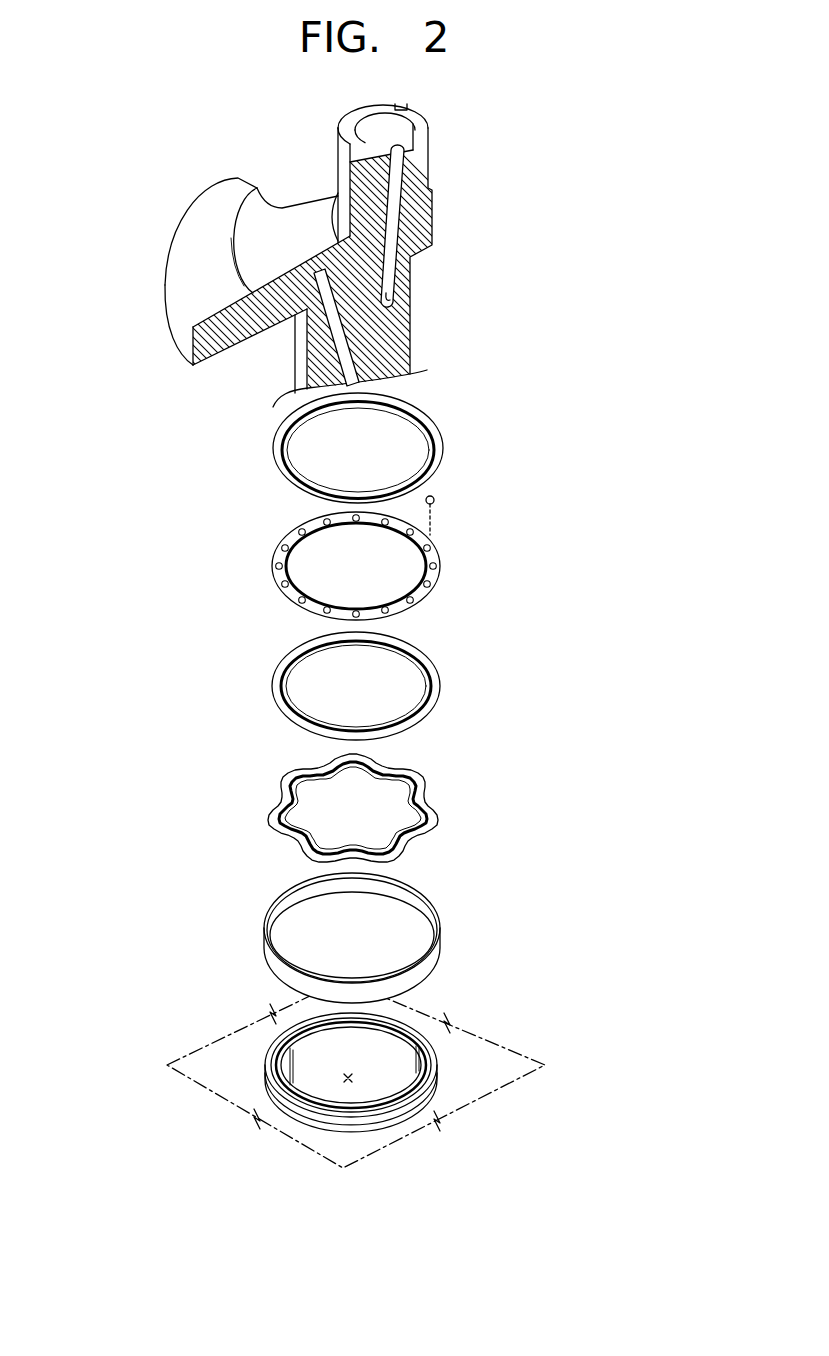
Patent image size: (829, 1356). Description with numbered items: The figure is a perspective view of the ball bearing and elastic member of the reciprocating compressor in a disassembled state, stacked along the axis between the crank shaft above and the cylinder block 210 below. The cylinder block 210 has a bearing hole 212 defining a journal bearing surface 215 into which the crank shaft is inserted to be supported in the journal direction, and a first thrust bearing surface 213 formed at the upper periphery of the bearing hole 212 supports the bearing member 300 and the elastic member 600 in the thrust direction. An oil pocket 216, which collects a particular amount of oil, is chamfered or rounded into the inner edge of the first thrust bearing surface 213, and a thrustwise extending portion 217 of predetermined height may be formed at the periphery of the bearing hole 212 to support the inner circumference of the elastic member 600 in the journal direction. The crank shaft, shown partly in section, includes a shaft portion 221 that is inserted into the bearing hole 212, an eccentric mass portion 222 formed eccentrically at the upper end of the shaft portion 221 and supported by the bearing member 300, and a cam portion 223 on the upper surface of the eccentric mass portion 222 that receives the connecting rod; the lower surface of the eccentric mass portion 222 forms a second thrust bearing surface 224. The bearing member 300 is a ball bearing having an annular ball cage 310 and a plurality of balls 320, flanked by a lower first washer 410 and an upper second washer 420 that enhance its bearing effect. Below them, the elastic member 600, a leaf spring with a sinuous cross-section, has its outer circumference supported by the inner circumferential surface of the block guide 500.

The cylinder block 210 is at (178, 1040).
The bearing hole 212 is at (355, 1078).
The first thrust bearing surface 213 is at (272, 1050).
The journal bearing surface 215 is at (325, 1083).
The oil pocket 216 is at (425, 1046).
The thrustwise extending portion 217 is at (438, 1067).
The shaft portion 221 is at (393, 330).
The eccentric mass portion 222 is at (177, 317).
The cam portion 223 is at (428, 133).
The second thrust bearing surface 224 is at (263, 332).
The bearing member 300 is at (457, 542).
The ball cage 310 is at (437, 550).
The balls 320 is at (434, 500).
The first washer 410 is at (437, 672).
The second washer 420 is at (440, 434).
The block guide 500 is at (437, 920).
The elastic member 600 is at (432, 803).